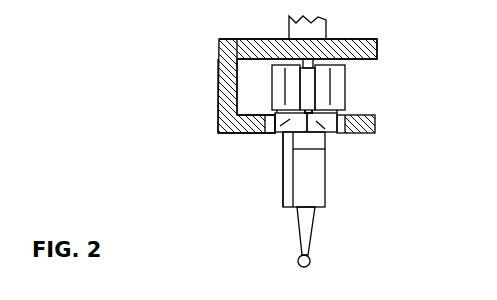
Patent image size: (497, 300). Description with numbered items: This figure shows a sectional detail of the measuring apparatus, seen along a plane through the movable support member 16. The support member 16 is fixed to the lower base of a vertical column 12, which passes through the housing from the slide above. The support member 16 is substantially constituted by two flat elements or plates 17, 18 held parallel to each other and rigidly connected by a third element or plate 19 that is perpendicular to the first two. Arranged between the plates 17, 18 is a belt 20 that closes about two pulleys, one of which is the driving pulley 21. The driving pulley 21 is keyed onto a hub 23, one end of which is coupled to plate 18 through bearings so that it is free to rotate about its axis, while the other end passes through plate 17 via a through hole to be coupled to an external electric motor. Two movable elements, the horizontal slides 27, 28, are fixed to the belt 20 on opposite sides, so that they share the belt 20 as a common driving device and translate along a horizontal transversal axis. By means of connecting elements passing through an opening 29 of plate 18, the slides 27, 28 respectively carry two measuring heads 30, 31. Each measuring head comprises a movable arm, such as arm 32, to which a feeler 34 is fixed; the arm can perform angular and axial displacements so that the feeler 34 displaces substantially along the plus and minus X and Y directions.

The vertical column 12 is at (293, 25).
The movable support member 16 is at (359, 31).
The flat element or plate 17 is at (258, 43).
The flat element or plate 18 is at (243, 136).
The third element or plate 19 is at (222, 88).
The belt 20 is at (328, 83).
The driving pulley 21 is at (305, 97).
The hub 23 is at (363, 61).
The horizontal slide 27 is at (320, 133).
The horizontal slide 28 is at (279, 131).
The opening 29 is at (342, 133).
The measuring head 30 is at (317, 183).
The measuring head 31 is at (285, 172).
The movable arm 32 is at (307, 228).
The feeler 34 is at (310, 260).